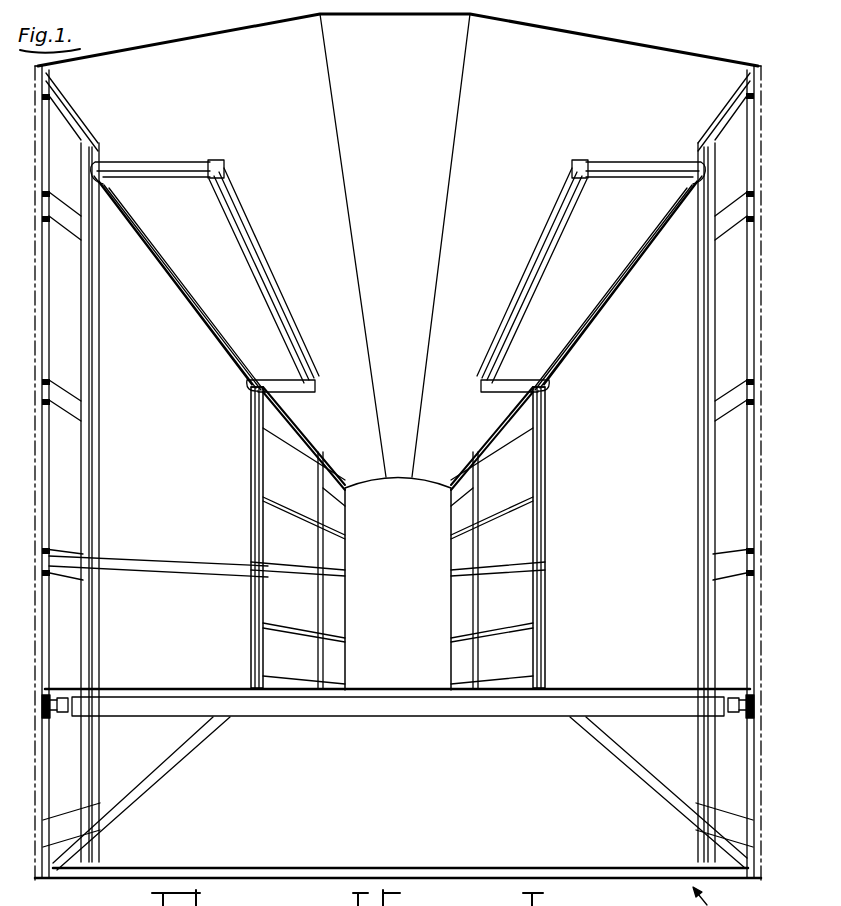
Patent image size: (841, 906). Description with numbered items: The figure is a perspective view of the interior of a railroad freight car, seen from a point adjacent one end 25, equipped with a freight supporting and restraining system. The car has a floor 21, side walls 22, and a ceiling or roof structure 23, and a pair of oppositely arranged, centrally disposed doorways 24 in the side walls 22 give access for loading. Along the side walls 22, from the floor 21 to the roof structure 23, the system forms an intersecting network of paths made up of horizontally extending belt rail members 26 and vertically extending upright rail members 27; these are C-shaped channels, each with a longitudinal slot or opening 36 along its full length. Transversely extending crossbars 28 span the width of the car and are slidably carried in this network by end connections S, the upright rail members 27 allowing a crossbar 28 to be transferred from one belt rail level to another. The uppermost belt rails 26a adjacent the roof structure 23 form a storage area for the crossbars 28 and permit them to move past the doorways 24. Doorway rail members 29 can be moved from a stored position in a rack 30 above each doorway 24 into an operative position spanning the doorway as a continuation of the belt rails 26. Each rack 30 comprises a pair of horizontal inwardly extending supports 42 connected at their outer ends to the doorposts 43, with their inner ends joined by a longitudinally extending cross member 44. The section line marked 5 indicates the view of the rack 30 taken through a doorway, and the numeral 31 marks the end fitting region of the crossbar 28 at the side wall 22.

The floor 21 is at (478, 858).
The side walls 22 is at (34, 498).
The ceiling or roof structure 23 is at (580, 47).
The doorways 24 is at (194, 452).
The end 25 is at (438, 575).
The belt rail members 26 is at (70, 233).
The uppermost belt rails 26a is at (60, 127).
The upright rail members 27 is at (43, 640).
The crossbars 28 is at (291, 718).
The doorway rail members 29 is at (197, 562).
The rack 30 is at (192, 155).
The bracket 31 is at (57, 704).
The slot or opening 36 is at (77, 515).
The supports 42 is at (144, 162).
The doorposts 43 is at (251, 445).
The cross member 44 is at (277, 284).
The section line for FIG. 5 is at (462, 364).
The end connection or attachment S is at (68, 722).